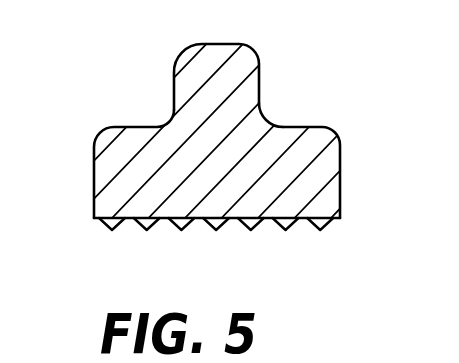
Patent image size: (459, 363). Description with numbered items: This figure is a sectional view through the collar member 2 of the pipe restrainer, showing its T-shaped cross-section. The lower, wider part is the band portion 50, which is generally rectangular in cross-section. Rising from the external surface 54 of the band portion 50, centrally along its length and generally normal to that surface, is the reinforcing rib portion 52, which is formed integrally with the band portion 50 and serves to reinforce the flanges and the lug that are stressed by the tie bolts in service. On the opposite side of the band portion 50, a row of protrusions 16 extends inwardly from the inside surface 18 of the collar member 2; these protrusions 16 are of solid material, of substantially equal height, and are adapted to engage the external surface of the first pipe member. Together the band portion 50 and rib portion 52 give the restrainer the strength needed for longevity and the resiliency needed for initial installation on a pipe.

The collar member 2 is at (245, 134).
The band portion 50 is at (341, 158).
The reinforcing rib portion 52 is at (256, 57).
The external surface 54 is at (292, 127).
The protrusions 16 is at (103, 221).
The inside surface 18 is at (305, 219).